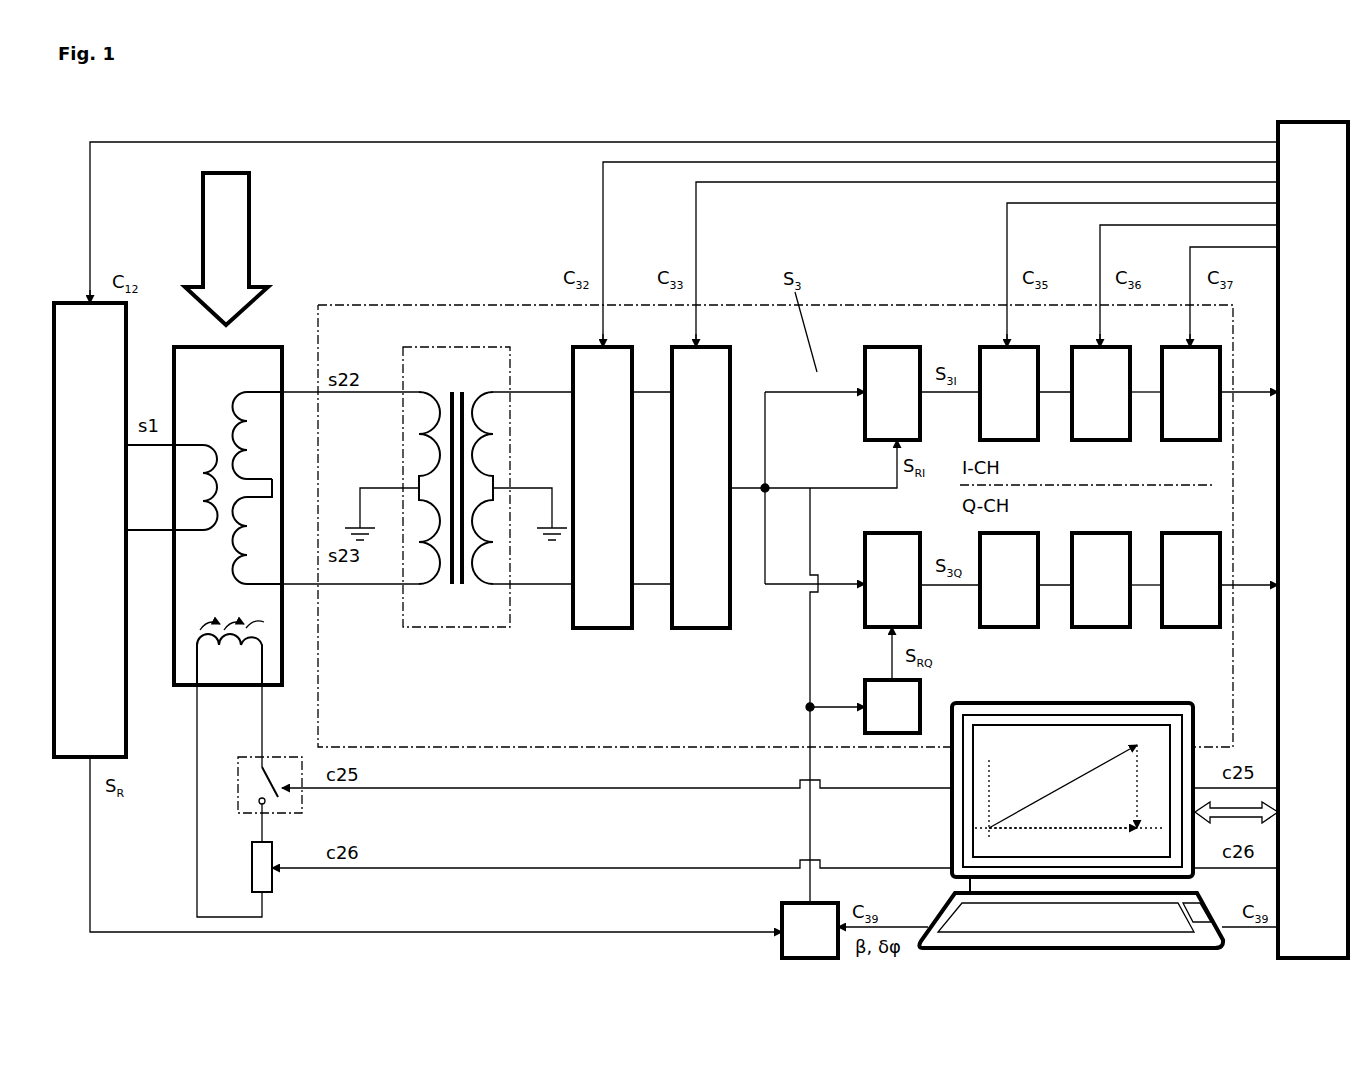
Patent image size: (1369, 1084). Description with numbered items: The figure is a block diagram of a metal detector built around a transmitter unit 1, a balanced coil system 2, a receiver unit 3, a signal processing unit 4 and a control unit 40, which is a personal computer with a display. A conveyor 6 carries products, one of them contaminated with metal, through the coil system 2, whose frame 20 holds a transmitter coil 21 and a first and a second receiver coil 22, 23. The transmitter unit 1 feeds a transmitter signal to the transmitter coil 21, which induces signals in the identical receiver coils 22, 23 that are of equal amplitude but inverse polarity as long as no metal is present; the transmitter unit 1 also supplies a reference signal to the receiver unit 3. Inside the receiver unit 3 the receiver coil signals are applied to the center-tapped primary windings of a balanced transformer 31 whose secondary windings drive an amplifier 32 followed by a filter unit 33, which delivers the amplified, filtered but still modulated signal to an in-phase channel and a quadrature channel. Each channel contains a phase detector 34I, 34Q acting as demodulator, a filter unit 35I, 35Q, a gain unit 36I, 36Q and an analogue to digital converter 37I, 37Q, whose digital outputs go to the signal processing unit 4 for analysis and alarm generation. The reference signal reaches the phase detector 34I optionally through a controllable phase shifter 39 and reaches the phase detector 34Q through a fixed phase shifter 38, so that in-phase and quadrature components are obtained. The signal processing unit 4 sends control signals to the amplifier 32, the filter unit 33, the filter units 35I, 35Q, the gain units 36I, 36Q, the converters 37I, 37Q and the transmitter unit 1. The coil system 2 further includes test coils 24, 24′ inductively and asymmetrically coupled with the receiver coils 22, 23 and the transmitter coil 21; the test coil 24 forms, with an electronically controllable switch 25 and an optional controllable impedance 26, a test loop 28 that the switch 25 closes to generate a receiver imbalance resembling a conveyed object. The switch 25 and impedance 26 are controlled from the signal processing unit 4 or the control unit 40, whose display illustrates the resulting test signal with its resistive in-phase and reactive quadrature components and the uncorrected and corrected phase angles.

The transmitter unit 1 is at (90, 530).
The coil system 2 is at (228, 516).
The receiver unit 3 is at (775, 526).
The signal processing unit 4 is at (1313, 540).
The conveyor 6 is at (229, 249).
The frame 20 is at (268, 347).
The transmitter coil 21 is at (172, 473).
The first receiver coil 22 is at (258, 420).
The second receiver coil 23 is at (258, 546).
The test coil 24 is at (229, 659).
The test coil 24′ is at (225, 613).
The controllable switch 25 is at (270, 774).
The controllable impedance 26 is at (276, 870).
The test loop 28 is at (197, 840).
The balanced transformer 31 is at (456, 487).
The amplifier 32 is at (602, 487).
The filter unit 33 is at (701, 487).
The phase detector 34I is at (892, 393).
The phase detector 34Q is at (892, 580).
The filter unit 35I is at (1009, 393).
The filter unit 35Q is at (1009, 580).
The gain unit 36I is at (1101, 393).
The gain unit 36Q is at (1101, 580).
The analogue to digital converter 37I is at (1191, 393).
The analogue to digital converter 37Q is at (1191, 580).
The fixed phase shifter 38 is at (892, 706).
The controllable phase shifter 39 is at (810, 930).
The control unit 40 is at (1071, 825).